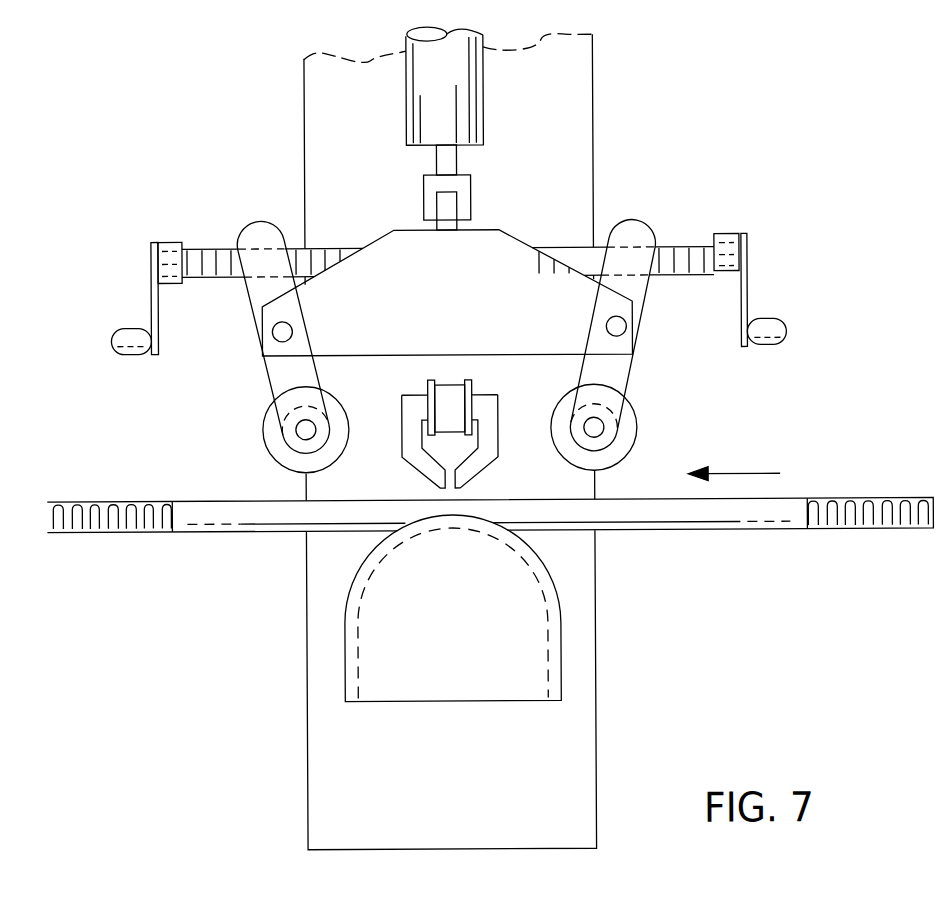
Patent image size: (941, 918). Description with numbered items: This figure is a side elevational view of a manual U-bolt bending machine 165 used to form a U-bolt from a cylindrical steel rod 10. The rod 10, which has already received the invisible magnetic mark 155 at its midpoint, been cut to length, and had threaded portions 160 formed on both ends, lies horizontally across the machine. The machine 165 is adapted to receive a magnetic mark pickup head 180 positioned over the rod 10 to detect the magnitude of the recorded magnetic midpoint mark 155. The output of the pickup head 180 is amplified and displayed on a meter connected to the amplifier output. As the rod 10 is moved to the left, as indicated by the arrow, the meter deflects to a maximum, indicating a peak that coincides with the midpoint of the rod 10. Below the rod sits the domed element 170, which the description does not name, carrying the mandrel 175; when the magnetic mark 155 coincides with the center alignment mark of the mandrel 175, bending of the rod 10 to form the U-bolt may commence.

The cylindrical steel rod 10 is at (675, 530).
The invisible magnetic mark 155 is at (521, 426).
The threaded portions 160 is at (113, 500).
The manual U-bolt bending machine 165 is at (552, 130).
The domed anvil 170 is at (402, 678).
The mandrel 175 is at (453, 588).
The magnetic mark pickup head 180 is at (421, 428).